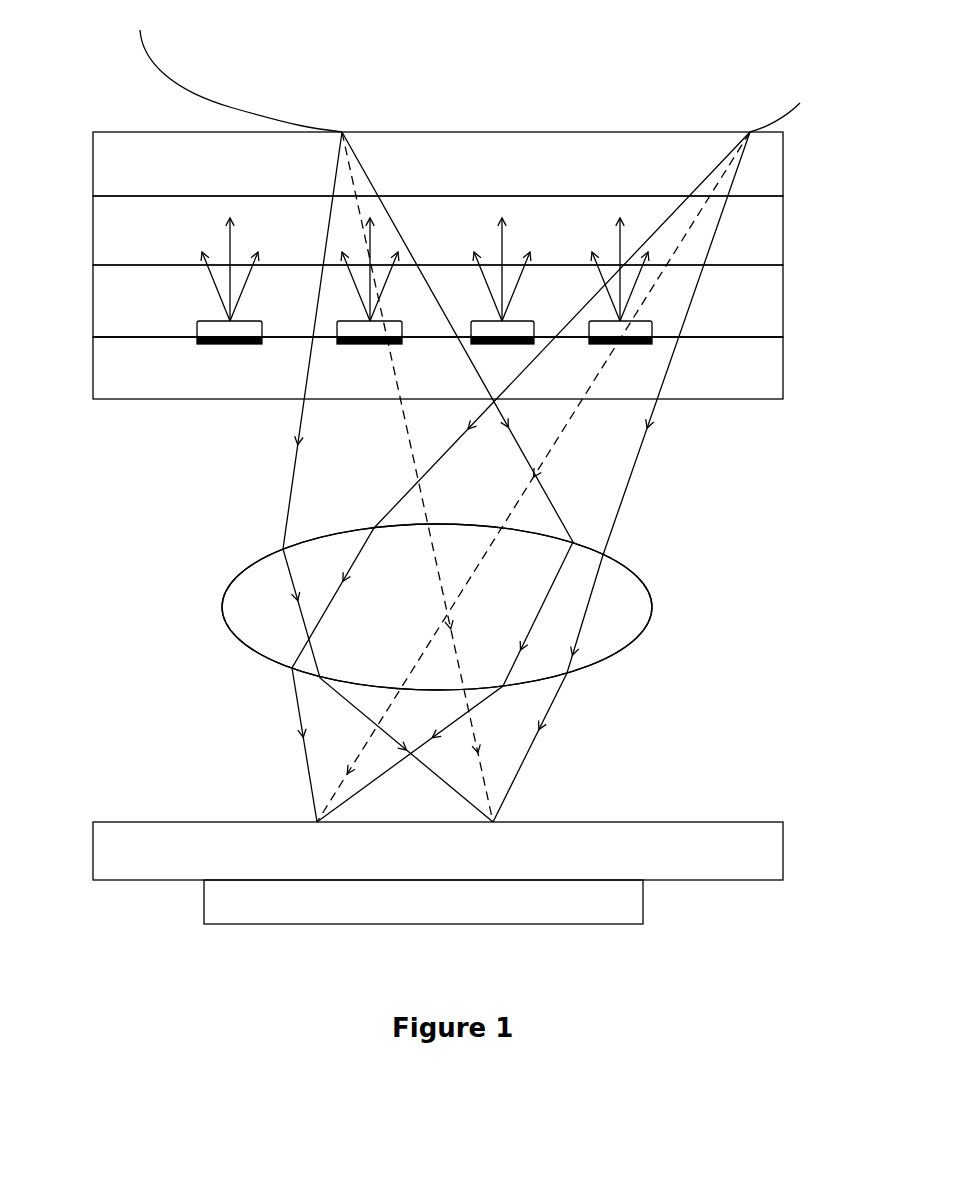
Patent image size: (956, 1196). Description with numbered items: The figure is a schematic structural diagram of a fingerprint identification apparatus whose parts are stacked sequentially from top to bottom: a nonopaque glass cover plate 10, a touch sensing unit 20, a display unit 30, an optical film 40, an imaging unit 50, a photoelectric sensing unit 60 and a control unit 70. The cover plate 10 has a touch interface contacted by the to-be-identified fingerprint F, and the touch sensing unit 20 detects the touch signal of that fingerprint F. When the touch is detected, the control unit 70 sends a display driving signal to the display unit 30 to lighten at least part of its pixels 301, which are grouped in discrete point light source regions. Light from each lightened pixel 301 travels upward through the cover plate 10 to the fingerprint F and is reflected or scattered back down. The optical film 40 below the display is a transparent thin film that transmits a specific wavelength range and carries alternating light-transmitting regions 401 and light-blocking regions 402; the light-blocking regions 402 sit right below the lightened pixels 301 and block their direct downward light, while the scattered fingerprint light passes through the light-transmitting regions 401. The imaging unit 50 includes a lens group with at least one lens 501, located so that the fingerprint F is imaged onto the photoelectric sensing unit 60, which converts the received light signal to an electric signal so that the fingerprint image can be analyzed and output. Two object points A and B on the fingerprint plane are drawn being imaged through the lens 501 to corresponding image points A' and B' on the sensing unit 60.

The to-be-identified fingerprint F is at (167, 57).
The nonopaque glass cover plate 10 is at (770, 172).
The touch sensing unit 20 is at (770, 237).
The display unit 30 is at (771, 308).
The optical film 40 is at (771, 374).
The pixel 301 is at (200, 328).
The light-transmitting regions 401 is at (295, 343).
The light-blocking regions 402 is at (218, 343).
The imaging unit 50 is at (700, 616).
The lens 501 is at (632, 596).
The photoelectric sensing unit 60 is at (768, 857).
The control unit 70 is at (633, 905).
The object point A is at (342, 118).
The object point B is at (748, 118).
The image point A' is at (491, 840).
The image point B' is at (314, 840).